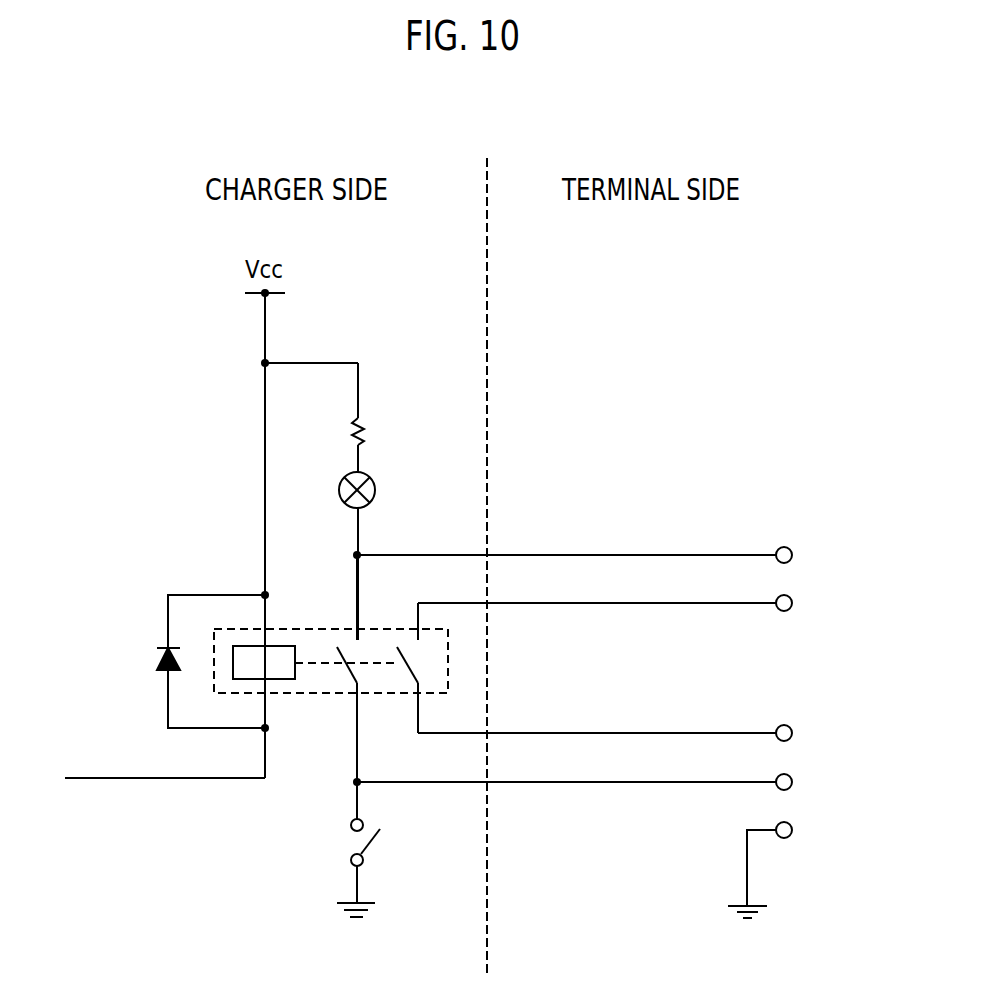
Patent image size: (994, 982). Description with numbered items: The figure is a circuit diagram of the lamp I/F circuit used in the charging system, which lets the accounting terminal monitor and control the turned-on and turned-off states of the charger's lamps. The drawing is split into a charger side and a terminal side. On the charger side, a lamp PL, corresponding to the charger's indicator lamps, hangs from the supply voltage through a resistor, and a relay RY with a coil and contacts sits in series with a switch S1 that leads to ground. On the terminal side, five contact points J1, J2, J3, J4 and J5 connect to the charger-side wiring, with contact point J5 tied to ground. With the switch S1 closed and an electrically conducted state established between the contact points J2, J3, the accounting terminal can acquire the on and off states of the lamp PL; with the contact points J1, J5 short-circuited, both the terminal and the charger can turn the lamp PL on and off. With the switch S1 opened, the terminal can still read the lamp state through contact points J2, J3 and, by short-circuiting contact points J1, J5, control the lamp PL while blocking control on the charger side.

The lamp PL is at (382, 483).
The relay RY is at (320, 616).
The switch S1 is at (384, 849).
The contact point J1 is at (792, 556).
The contact point J2 is at (792, 604).
The contact point J3 is at (792, 734).
The connection terminal J4 is at (792, 783).
The contact point J5 is at (792, 831).